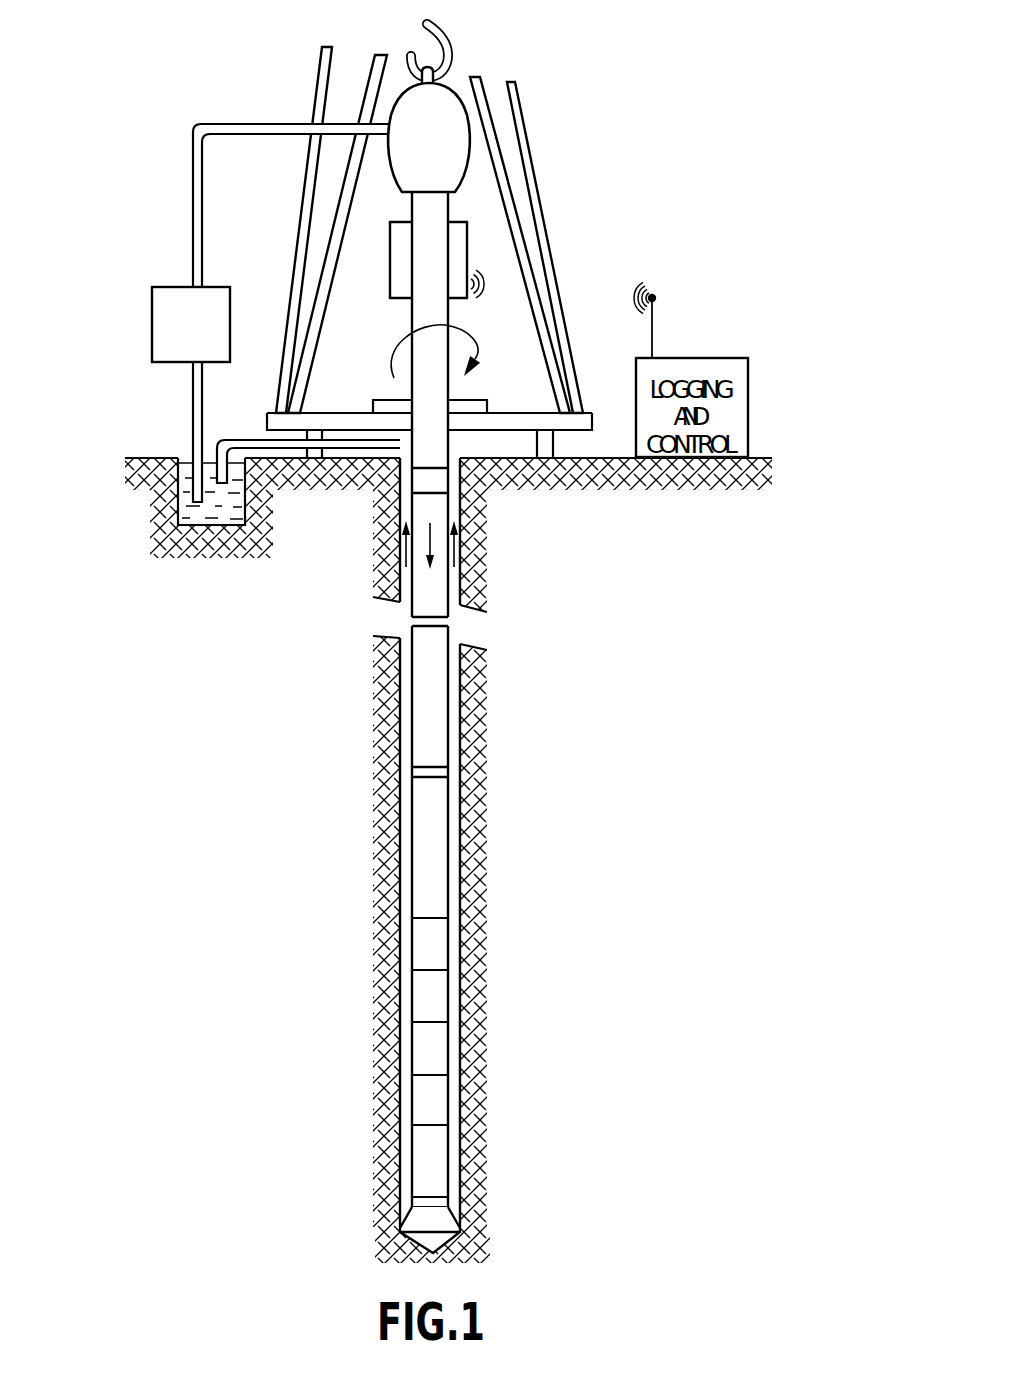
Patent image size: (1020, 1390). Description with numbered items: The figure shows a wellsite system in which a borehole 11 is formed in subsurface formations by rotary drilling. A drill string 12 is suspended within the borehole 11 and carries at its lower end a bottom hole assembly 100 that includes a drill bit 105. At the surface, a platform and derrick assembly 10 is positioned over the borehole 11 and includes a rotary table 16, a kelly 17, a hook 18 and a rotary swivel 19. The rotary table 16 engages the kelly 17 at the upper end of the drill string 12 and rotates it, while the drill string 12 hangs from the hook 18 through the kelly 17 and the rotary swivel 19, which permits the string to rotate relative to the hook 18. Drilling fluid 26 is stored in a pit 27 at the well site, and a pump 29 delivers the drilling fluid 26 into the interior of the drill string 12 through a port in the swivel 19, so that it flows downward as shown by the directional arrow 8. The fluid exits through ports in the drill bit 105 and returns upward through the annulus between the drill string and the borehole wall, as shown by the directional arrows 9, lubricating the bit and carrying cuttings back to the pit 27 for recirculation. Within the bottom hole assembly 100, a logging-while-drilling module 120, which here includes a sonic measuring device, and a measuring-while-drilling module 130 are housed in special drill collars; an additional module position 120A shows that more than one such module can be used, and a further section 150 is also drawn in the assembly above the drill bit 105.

The directional arrow 8 is at (430, 553).
The directional arrows 9 is at (460, 537).
The platform and derrick assembly 10 is at (563, 116).
The borehole 11 is at (467, 445).
The drill string 12 is at (412, 444).
The rotary table 16 is at (478, 400).
The kelly 17 is at (427, 310).
The hook 18 is at (420, 15).
The rotary swivel 19 is at (397, 163).
The drilling fluid 26 is at (215, 515).
The pit 27 is at (177, 444).
The pump 29 is at (231, 328).
The bottom hole assembly 100 is at (350, 918).
The drill bit 105 is at (437, 1223).
The logging-while-drilling module 120 is at (433, 993).
The logging-while-drilling module 120A is at (433, 1100).
The measuring-while-drilling module 130 is at (433, 1052).
The logging tool 150 is at (433, 1160).